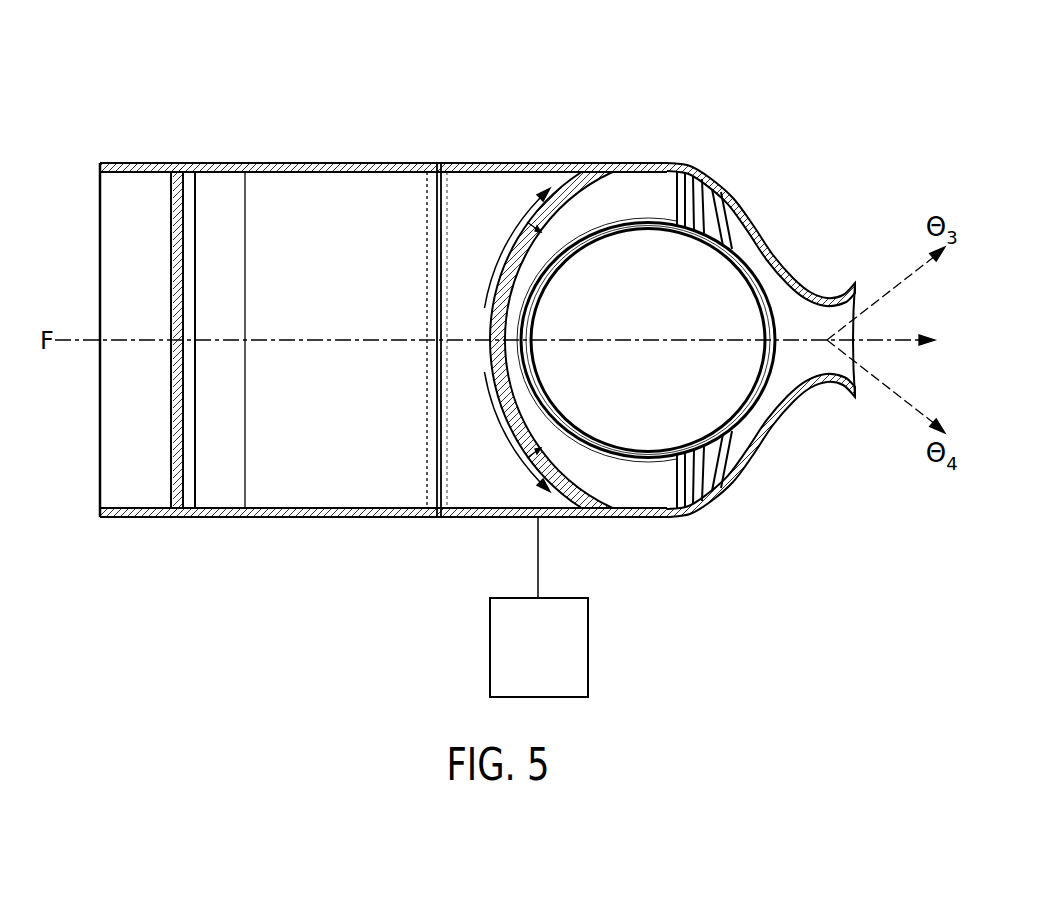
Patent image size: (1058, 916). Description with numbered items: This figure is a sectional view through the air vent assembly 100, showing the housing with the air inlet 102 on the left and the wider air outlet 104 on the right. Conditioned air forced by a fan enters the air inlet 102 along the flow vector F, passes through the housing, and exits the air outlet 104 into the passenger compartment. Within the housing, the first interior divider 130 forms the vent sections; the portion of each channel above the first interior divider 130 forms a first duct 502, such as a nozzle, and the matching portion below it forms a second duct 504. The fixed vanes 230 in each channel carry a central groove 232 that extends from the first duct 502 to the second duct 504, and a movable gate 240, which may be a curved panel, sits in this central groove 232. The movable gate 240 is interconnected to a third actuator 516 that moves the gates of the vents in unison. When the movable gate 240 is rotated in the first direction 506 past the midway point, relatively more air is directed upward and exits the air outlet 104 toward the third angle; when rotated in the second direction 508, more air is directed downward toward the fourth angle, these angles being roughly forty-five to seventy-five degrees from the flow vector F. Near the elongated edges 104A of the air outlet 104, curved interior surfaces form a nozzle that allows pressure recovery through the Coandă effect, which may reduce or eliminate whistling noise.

The air vent assembly 100 is at (795, 84).
The air inlet 102 is at (120, 245).
The air outlet 104 is at (852, 373).
The elongated edges of the air outlet 104A is at (827, 287).
The first interior divider 130 is at (633, 330).
The fixed vanes 230 is at (477, 188).
The central groove 232 is at (575, 182).
The movable gate 240 is at (530, 447).
The first duct 502 is at (633, 210).
The second duct 504 is at (633, 500).
The first direction 506 is at (456, 261).
The second direction 508 is at (456, 470).
The third actuator 516 is at (524, 660).